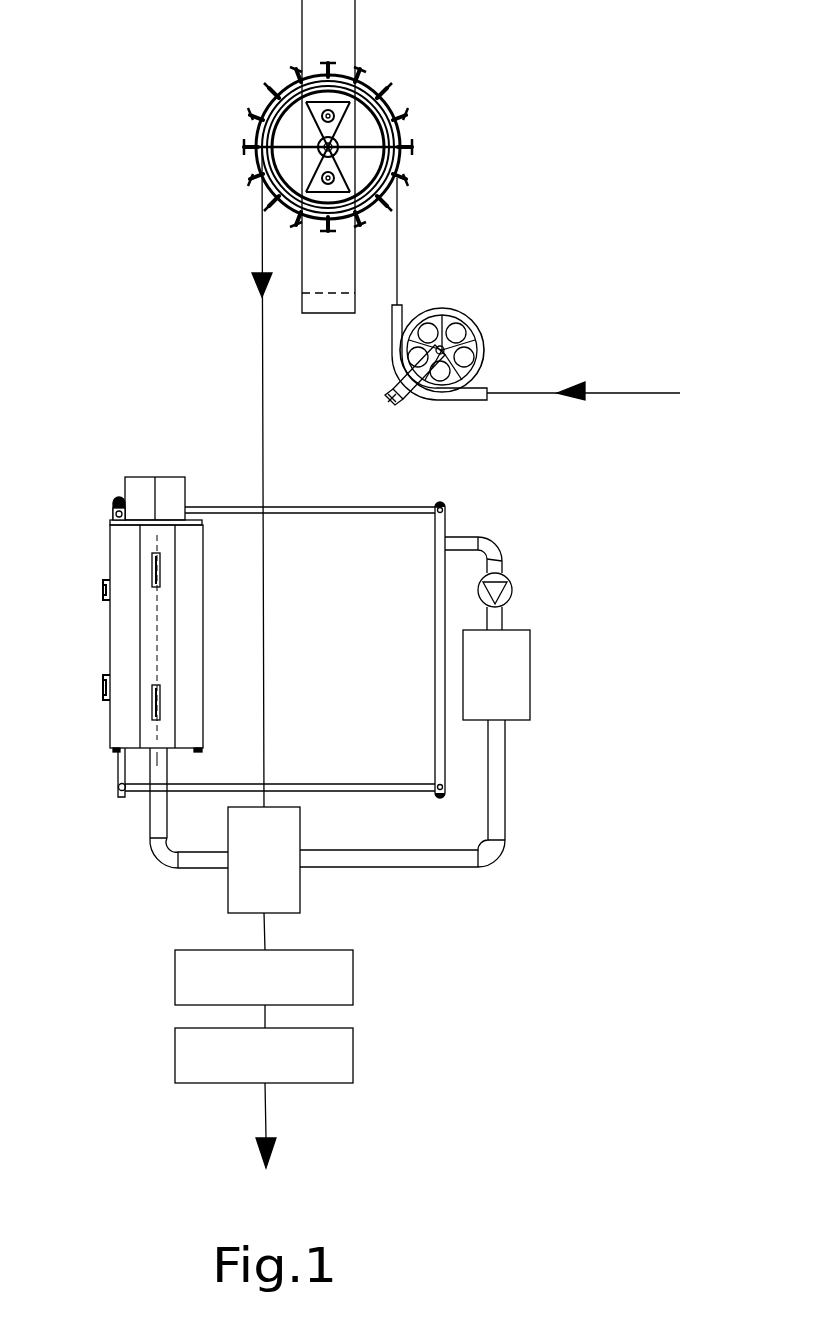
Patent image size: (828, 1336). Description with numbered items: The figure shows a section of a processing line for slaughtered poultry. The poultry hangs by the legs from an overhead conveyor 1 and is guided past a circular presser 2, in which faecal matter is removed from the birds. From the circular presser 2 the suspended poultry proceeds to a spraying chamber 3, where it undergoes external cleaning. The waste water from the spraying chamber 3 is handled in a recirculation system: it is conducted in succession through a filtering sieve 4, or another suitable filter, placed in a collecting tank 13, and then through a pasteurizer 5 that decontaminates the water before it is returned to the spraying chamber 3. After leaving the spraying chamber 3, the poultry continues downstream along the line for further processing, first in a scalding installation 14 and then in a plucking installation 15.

The overhead conveyor 1 is at (398, 251).
The circular presser 2 is at (403, 117).
The spraying chamber 3 is at (228, 880).
The filtering sieve 4 is at (110, 557).
The pasteurizer 5 is at (531, 678).
The collecting tank 13 is at (330, 506).
The scalding installation 14 is at (353, 979).
The plucking installation 15 is at (353, 1056).